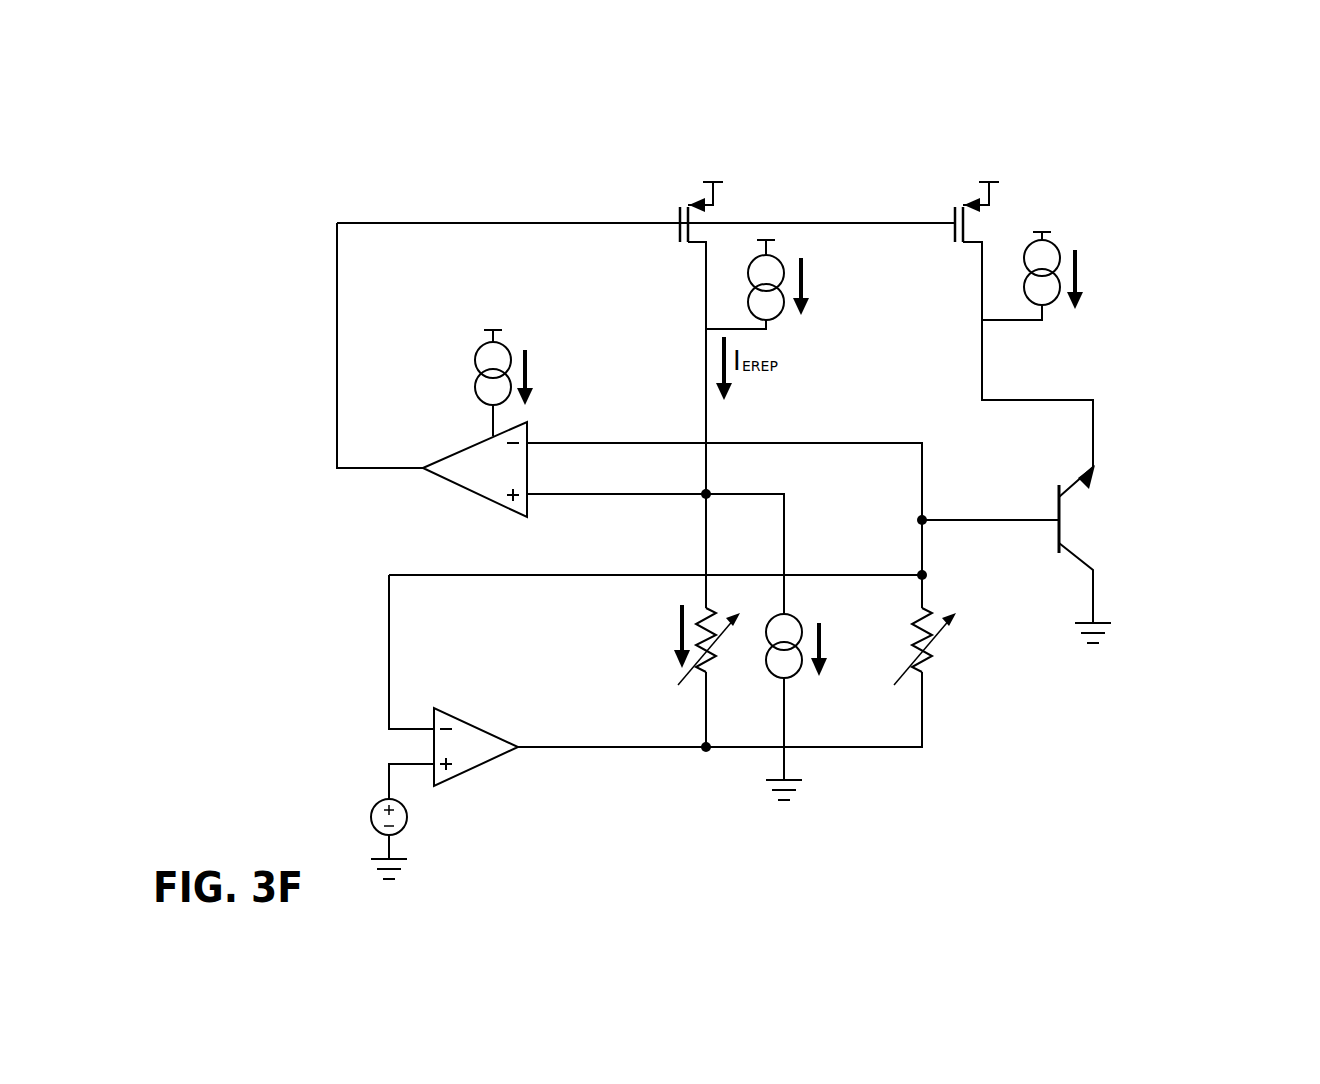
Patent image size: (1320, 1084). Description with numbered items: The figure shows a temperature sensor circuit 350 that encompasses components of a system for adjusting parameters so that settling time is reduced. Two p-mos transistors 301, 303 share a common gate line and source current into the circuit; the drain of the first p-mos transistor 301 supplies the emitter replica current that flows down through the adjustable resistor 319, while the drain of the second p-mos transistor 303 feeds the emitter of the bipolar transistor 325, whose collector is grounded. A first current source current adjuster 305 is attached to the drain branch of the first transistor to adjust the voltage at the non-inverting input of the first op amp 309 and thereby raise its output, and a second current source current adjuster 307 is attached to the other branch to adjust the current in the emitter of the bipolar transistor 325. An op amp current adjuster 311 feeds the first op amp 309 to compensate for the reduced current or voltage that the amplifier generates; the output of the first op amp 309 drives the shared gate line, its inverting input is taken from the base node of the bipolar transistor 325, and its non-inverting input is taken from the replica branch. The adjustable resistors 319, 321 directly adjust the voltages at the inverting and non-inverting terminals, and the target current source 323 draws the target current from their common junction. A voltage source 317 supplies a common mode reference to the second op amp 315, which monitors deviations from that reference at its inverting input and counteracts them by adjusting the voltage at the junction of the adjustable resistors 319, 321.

The p-mos transistor 301 is at (716, 202).
The p-mos transistor 303 is at (990, 202).
The current source current adjuster 305 is at (790, 275).
The current source current adjuster 307 is at (1060, 255).
The op amp 1 309 is at (456, 486).
The op amp current adjuster 311 is at (508, 348).
The op amp 2 315 is at (463, 777).
The voltage source 317 is at (372, 810).
The adjustable resistor 319 is at (708, 614).
The adjustable resistor 321 is at (927, 613).
The target current source 323 is at (790, 614).
The bipolar transistor 325 is at (1057, 520).
The temperature sensor circuit 350 is at (1165, 146).